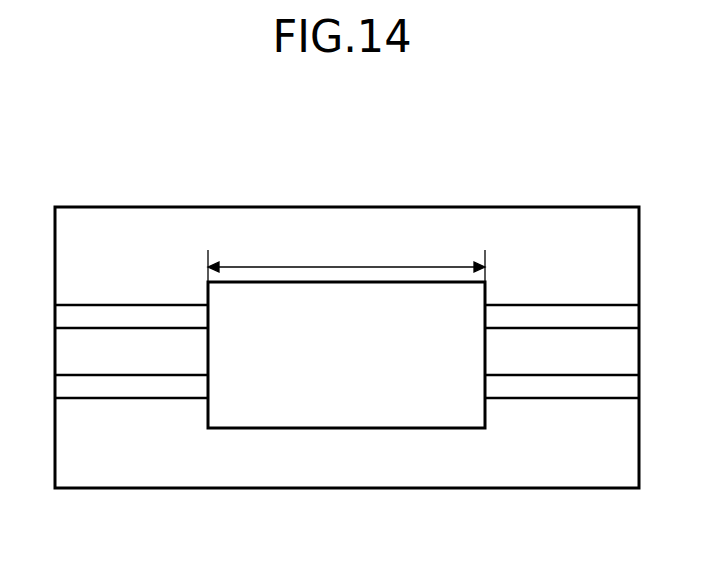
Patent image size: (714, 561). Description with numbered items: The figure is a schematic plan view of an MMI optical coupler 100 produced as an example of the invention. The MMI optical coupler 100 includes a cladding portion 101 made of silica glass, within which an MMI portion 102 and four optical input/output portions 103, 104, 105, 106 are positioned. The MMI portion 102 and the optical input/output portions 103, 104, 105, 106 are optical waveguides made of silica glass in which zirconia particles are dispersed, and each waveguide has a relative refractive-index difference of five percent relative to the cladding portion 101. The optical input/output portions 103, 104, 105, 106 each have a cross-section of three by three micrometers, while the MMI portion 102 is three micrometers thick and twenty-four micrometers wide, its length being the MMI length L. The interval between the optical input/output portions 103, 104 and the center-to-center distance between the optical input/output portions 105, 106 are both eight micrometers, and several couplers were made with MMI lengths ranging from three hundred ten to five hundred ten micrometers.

The MMI optical coupler 100 is at (609, 177).
The cladding portion 101 is at (489, 222).
The MMI portion 102 is at (383, 429).
The optical input/output portion 103 is at (121, 303).
The optical input/output portion 104 is at (123, 399).
The optical input/output portion 105 is at (562, 303).
The optical input/output portion 106 is at (562, 399).